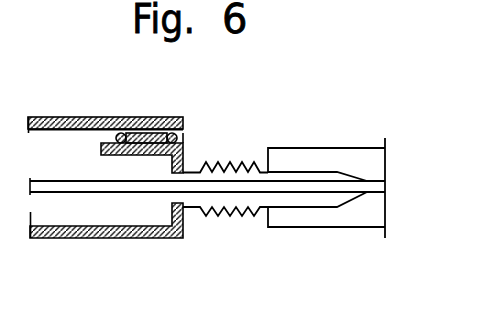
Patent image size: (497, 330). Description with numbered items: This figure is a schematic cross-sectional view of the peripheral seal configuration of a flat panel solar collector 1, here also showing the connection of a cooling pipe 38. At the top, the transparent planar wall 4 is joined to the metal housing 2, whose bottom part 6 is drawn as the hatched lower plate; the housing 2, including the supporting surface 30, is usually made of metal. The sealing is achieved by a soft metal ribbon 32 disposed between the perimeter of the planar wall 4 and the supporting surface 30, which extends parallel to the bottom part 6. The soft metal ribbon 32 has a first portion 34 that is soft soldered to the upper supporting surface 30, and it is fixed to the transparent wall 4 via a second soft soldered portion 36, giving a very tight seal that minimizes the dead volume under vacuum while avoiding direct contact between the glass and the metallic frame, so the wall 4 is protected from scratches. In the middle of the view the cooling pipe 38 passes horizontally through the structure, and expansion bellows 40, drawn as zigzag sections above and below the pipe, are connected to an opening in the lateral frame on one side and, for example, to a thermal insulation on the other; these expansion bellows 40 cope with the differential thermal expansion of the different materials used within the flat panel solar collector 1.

The flat panel solar collector 1 is at (57, 104).
The housing 2 is at (118, 246).
The top transparent planar wall 4 is at (110, 98).
The bottom part 6 is at (147, 238).
The supporting surface 30 is at (100, 151).
The soft metal ribbon 32 is at (170, 132).
The first portion 34 is at (124, 134).
The second soft soldered portion 36 is at (183, 140).
The cooling pipe 38 is at (75, 190).
The expansion bellows 40 is at (223, 212).